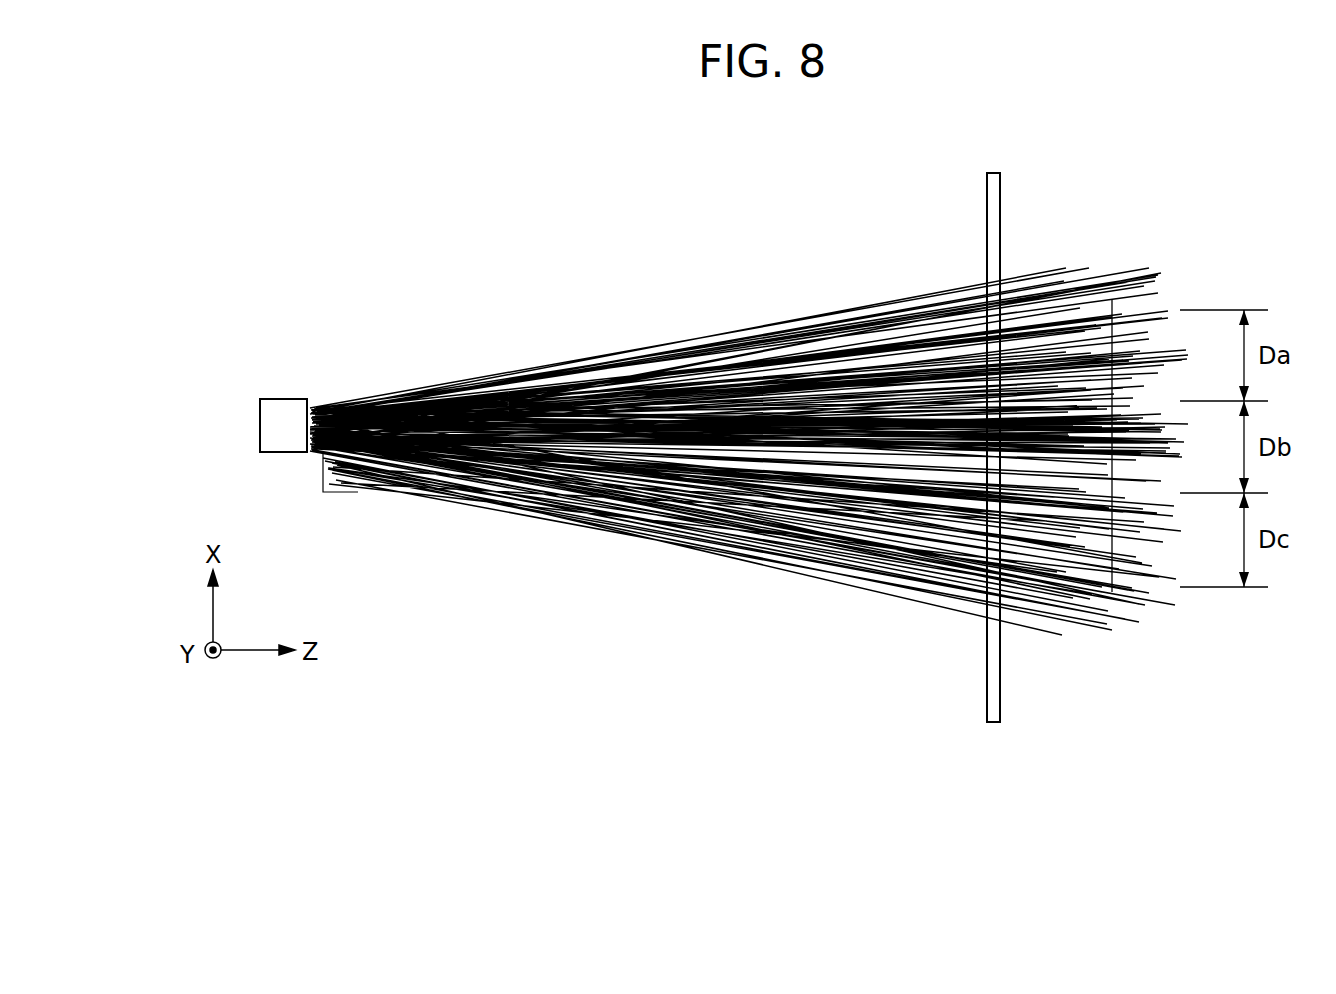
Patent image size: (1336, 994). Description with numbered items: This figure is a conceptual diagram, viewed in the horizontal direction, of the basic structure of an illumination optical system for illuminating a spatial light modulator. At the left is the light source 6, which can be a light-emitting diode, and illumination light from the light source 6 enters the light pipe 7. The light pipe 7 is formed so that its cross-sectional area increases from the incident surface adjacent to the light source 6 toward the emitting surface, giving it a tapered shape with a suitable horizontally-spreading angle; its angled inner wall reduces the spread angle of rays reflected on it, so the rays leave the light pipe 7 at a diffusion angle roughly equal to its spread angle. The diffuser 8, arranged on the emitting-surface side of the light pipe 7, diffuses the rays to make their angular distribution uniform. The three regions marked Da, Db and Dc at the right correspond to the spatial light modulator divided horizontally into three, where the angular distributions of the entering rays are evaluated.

The light source 6 is at (282, 410).
The light pipe 7 is at (578, 357).
The diffuser 8 is at (993, 203).